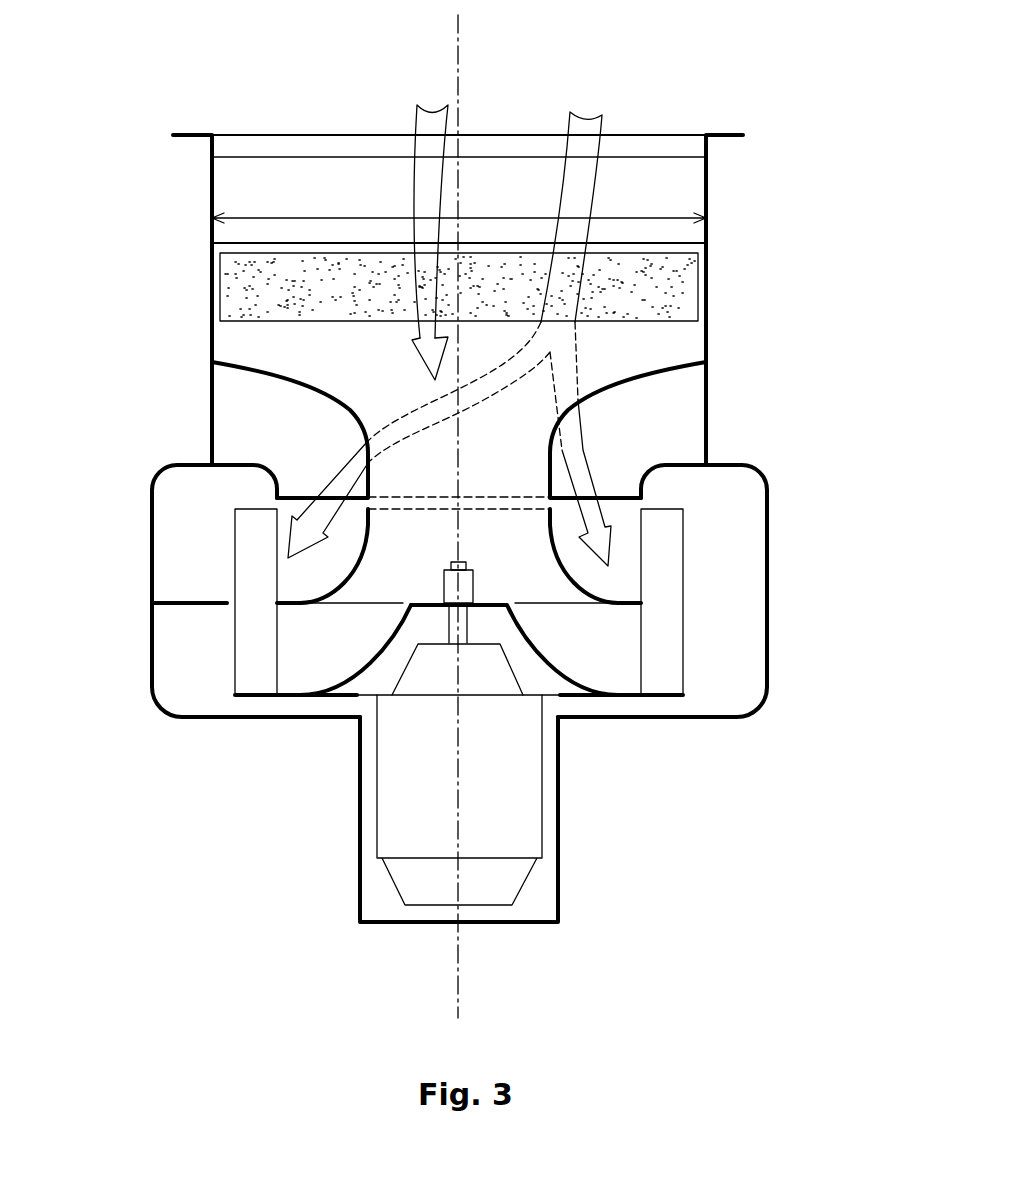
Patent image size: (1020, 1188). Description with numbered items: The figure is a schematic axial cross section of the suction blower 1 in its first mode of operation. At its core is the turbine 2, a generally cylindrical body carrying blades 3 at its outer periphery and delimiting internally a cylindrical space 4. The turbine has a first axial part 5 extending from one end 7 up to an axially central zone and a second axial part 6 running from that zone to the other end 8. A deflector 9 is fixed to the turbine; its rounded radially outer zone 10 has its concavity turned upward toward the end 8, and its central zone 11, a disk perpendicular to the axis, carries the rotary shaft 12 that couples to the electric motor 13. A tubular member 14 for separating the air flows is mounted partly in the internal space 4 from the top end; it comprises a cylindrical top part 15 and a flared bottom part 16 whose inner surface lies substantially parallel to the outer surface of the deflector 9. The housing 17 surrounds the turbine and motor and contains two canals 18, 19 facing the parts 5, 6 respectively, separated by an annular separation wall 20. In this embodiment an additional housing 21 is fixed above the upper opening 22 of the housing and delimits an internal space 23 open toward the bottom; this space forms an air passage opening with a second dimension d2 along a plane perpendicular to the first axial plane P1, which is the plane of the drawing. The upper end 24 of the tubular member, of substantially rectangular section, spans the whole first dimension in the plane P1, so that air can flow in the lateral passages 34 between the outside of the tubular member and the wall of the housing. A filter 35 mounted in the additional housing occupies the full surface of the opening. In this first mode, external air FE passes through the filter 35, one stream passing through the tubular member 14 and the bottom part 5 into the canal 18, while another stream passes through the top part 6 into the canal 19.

The suction blower 1 is at (460, 499).
The turbine 2 is at (626, 636).
The blades 3 is at (663, 670).
The cylindrical space 4 is at (580, 660).
The first axial part 5 is at (253, 658).
The second axial part 6 is at (250, 573).
The end of the turbine 7 is at (260, 697).
The end of the turbine 8 is at (248, 508).
The deflector 9 is at (420, 690).
The rounded radially outer zone 10 is at (353, 683).
The central zone 11 is at (430, 605).
The rotary shaft 12 is at (462, 638).
The electric motor 13 is at (515, 810).
The tubular member 14 is at (673, 375).
The cylindrical top part 15 is at (552, 482).
The bottom part 16 is at (597, 590).
The housing 17 is at (720, 463).
The canal 18 is at (177, 658).
The canal 19 is at (168, 522).
The annular separation wall 20 is at (190, 605).
The additional housing 21 is at (706, 192).
The upper opening 22 is at (277, 498).
The internal space 23 is at (240, 350).
The upper end 24 is at (706, 340).
The lateral passages 34 is at (291, 428).
The filter 35 is at (673, 293).
The first axial plane P1 is at (458, 47).
The external air FE is at (423, 124).
The second dimension d2 is at (478, 212).